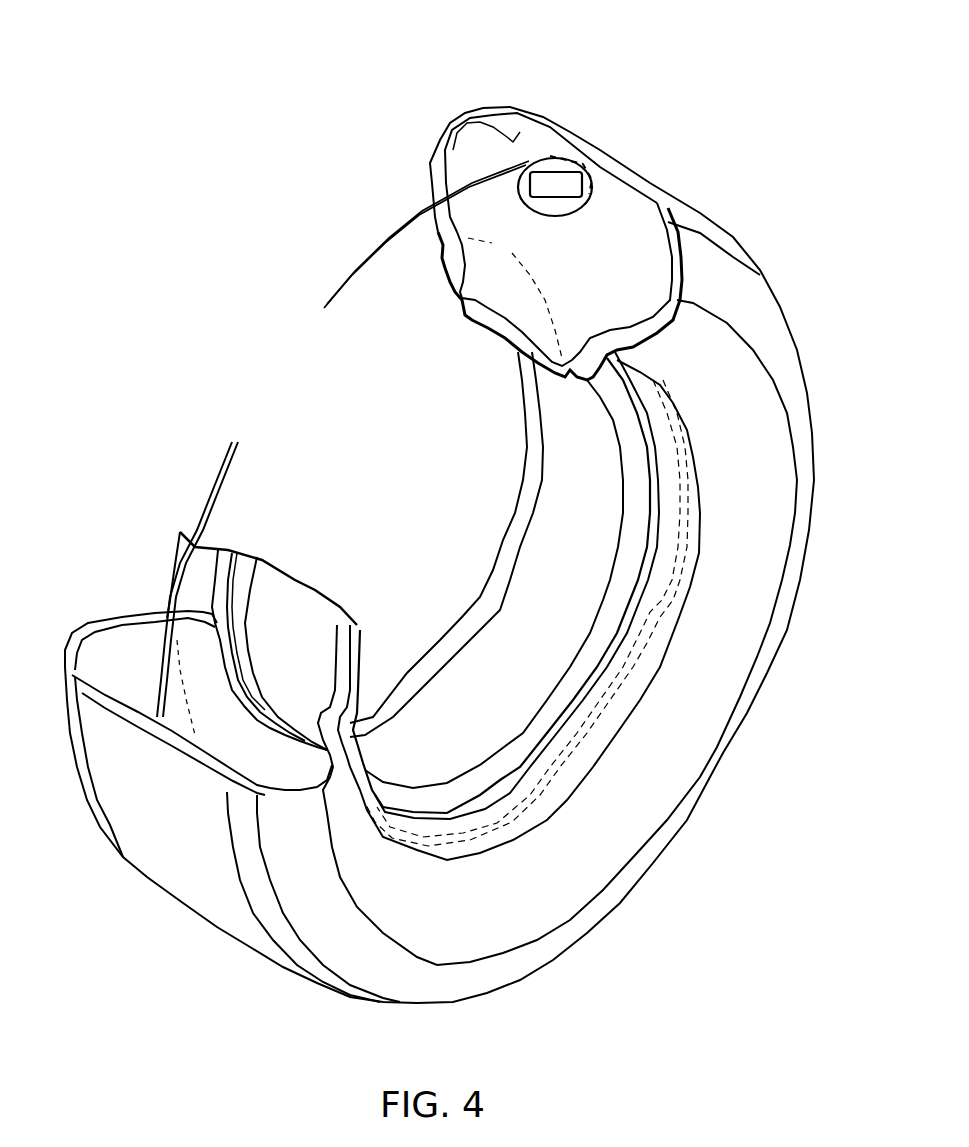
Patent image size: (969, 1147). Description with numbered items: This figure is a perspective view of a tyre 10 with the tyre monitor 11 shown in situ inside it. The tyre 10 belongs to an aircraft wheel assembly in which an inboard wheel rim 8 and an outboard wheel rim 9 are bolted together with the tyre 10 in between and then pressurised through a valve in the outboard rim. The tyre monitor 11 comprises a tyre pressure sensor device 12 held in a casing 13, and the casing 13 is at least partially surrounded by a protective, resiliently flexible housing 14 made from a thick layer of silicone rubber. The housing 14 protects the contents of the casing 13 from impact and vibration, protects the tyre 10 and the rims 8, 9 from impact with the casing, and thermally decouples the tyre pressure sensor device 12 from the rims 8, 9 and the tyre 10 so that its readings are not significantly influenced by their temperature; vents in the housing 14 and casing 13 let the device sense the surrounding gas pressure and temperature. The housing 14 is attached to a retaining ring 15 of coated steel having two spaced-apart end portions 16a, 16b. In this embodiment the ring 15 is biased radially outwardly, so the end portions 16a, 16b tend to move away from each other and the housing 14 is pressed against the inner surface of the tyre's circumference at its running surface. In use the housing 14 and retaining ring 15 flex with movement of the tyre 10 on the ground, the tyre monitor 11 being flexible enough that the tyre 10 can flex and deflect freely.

The inboard wheel rim 8 is at (597, 610).
The outboard wheel rim 9 is at (591, 610).
The tyre 10 is at (533, 163).
The tyre monitor 11 is at (185, 123).
The tyre pressure sensor device 12 is at (545, 172).
The casing 13 is at (583, 101).
The protective, resiliently flexible housing 14 is at (587, 163).
The retaining ring 15 is at (170, 614).
The end portion 16a is at (235, 442).
The end portion 16b is at (340, 290).